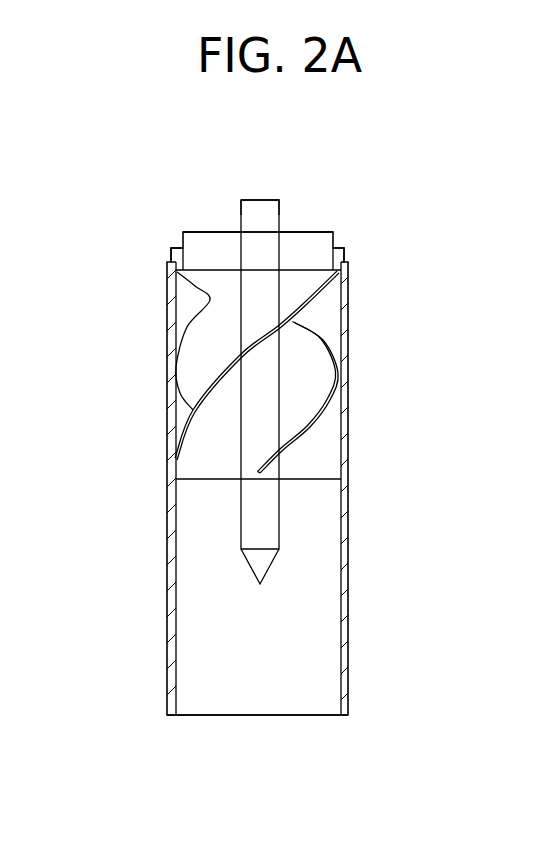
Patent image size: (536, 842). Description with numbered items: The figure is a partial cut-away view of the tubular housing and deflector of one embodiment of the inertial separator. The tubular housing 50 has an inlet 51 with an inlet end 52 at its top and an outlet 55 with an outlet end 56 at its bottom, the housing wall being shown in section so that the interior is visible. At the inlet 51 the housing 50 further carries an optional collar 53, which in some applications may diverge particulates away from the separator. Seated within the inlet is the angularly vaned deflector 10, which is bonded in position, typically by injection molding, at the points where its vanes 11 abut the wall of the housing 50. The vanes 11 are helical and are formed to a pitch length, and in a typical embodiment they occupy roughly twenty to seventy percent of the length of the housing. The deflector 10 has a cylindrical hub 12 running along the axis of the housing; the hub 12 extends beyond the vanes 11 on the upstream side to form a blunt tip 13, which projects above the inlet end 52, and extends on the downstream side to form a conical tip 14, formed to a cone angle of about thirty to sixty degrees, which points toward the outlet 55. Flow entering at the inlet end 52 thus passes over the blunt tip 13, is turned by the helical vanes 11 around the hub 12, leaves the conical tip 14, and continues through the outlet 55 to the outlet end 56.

The angularly vaned deflector 10 is at (305, 345).
The vanes 11 is at (310, 388).
The cylindrical hub 12 is at (263, 225).
The blunt tip 13 is at (258, 200).
The conical tip 14 is at (267, 575).
The tubular housing 50 is at (348, 445).
The inlet 51 is at (225, 232).
The inlet end 52 is at (187, 232).
The collar 53 is at (180, 242).
The outlet 55 is at (245, 677).
The outlet end 56 is at (169, 715).